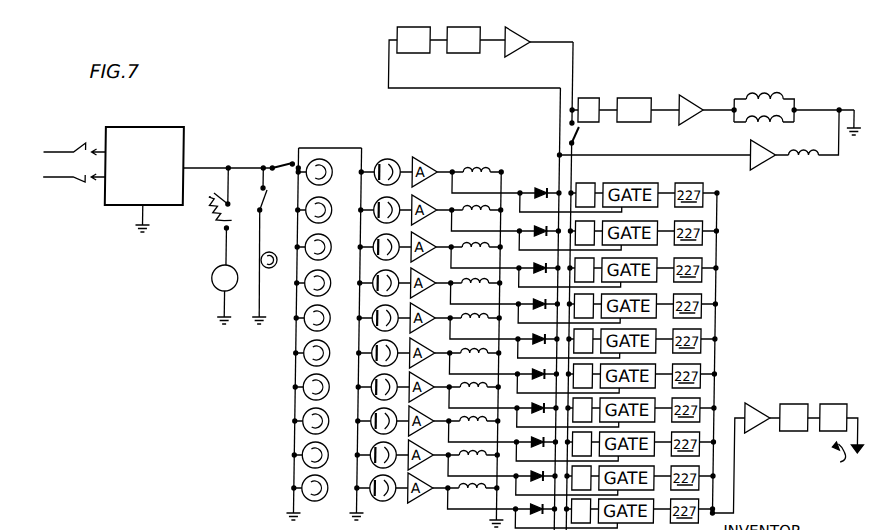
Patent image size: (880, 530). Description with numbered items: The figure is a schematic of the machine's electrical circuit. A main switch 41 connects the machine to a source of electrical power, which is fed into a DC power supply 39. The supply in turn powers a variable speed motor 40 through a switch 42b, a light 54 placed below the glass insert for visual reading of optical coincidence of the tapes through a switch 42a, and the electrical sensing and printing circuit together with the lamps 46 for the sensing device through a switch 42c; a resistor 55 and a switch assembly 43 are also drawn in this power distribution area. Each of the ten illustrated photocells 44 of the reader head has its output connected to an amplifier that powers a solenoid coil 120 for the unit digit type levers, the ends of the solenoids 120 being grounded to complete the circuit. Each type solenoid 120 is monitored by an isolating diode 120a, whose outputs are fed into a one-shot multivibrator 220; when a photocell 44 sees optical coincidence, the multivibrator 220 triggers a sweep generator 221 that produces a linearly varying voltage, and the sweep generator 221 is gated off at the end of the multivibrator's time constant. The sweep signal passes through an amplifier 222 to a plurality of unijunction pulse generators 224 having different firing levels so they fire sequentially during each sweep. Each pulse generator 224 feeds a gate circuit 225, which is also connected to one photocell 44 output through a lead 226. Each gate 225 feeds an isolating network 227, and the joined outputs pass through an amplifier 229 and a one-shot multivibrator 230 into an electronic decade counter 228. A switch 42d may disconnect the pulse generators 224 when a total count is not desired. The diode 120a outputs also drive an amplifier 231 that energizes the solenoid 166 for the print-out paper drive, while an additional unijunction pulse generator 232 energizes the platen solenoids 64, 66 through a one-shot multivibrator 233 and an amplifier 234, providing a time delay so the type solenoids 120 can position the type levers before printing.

The DC power supply 39 is at (182, 125).
The variable speed motor 40 is at (213, 279).
The main switch 41 is at (77, 183).
The switch 42a is at (263, 192).
The switch 42b is at (222, 188).
The switch 42c is at (286, 161).
The switch 42d is at (576, 132).
The multi-pole switch 43 is at (283, 133).
The photocell 44 is at (399, 151).
The lamp 46 is at (329, 182).
The light 54 is at (276, 267).
The resistor 55 is at (211, 226).
The platen solenoid 64 is at (772, 84).
The platen solenoid 66 is at (780, 125).
The solenoid coil 120 is at (506, 165).
The isolating diode 120a is at (552, 172).
The solenoid 166 is at (806, 161).
The one-shot multivibrator 220 is at (409, 53).
The sweep generator 221 is at (457, 53).
The amplifier 222 is at (512, 54).
The unijunction pulse generator 224 is at (597, 165).
The gate circuit 225 is at (645, 182).
The lead 226 is at (489, 192).
The isolating network 227 is at (694, 353).
The electronic decade counter 228 is at (818, 433).
The amplifier 229 is at (759, 400).
The one-shot multivibrator 230 is at (800, 404).
The amplifier 231 is at (766, 164).
The unijunction pulse generator 232 is at (592, 96).
The one-shot multivibrator 233 is at (638, 121).
The amplifier 234 is at (688, 122).